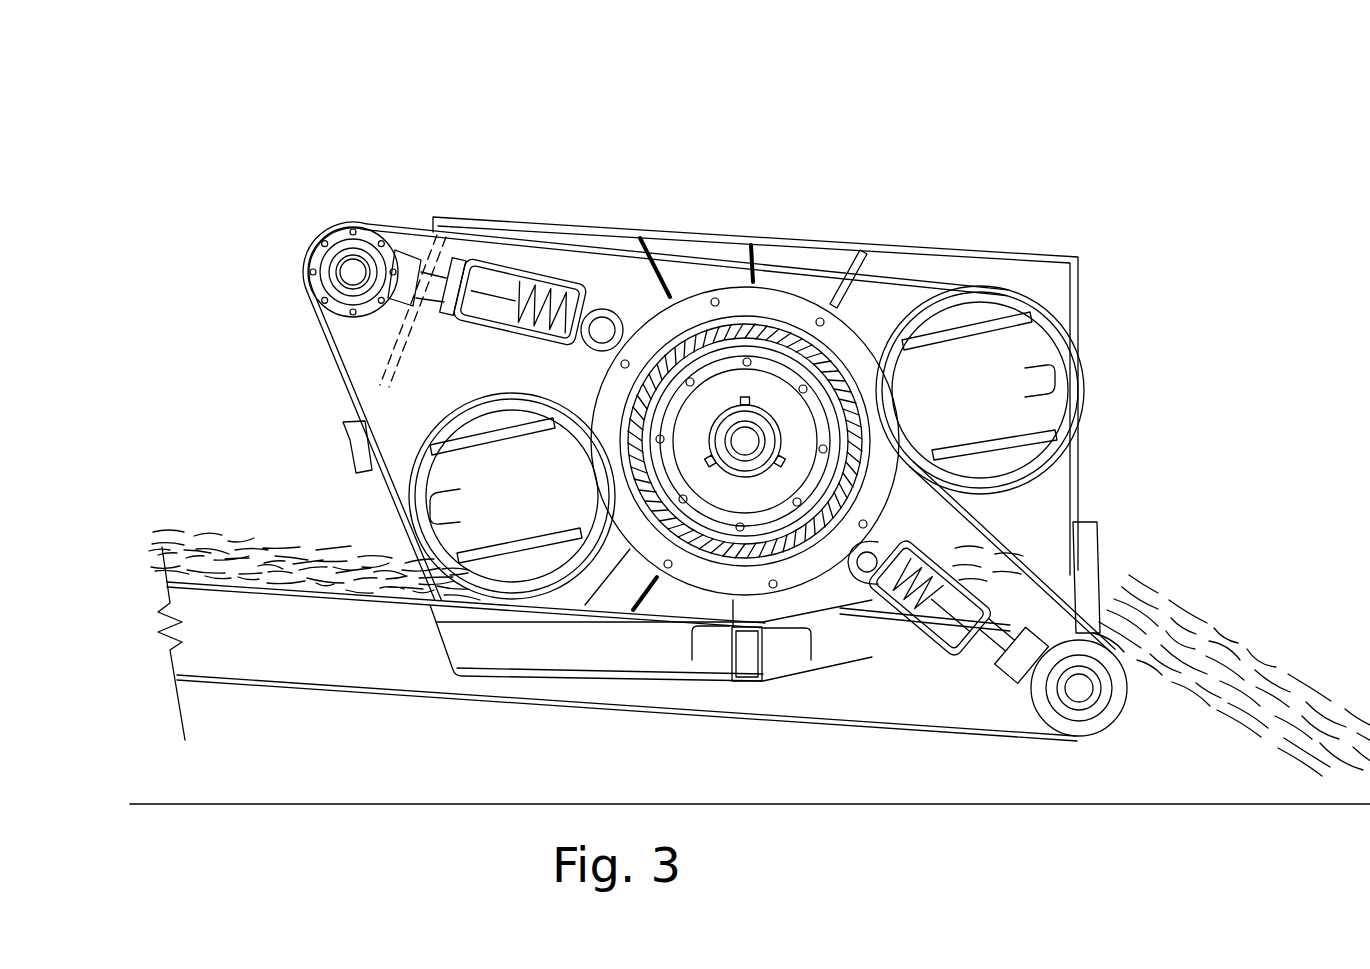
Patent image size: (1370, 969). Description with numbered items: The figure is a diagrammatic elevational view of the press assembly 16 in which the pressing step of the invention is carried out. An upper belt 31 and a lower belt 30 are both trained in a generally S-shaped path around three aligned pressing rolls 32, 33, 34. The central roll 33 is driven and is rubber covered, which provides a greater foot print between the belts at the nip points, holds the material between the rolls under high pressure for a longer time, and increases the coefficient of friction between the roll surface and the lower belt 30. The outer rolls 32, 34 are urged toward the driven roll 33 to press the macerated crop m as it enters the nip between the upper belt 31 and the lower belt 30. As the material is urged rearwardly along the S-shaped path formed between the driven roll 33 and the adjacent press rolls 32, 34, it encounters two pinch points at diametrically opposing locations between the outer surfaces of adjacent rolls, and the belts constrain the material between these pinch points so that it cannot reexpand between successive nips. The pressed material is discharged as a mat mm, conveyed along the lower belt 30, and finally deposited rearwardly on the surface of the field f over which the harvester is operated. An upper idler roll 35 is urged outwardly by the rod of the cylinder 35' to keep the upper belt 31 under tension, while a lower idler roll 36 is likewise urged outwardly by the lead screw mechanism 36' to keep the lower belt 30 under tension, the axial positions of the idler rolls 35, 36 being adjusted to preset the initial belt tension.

The press assembly 16 is at (783, 190).
The lower belt 30 is at (313, 678).
The upper belt 31 is at (405, 225).
The pressing roll 32 is at (470, 395).
The driven roll 33 is at (705, 565).
The pressing roll 34 is at (900, 318).
The upper idler roll 35 is at (318, 284).
The cylinder 35' is at (505, 245).
The lower idler roll 36 is at (1028, 714).
The lead screw mechanism 36' is at (928, 663).
The macerated crop m is at (265, 535).
The mat mm is at (1160, 633).
The field f is at (1073, 806).